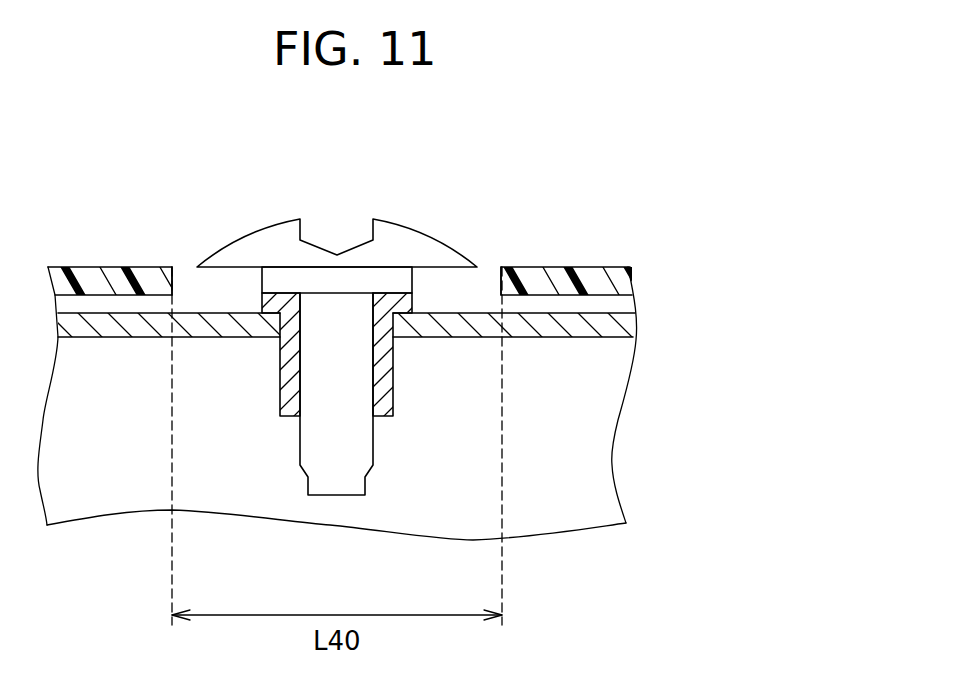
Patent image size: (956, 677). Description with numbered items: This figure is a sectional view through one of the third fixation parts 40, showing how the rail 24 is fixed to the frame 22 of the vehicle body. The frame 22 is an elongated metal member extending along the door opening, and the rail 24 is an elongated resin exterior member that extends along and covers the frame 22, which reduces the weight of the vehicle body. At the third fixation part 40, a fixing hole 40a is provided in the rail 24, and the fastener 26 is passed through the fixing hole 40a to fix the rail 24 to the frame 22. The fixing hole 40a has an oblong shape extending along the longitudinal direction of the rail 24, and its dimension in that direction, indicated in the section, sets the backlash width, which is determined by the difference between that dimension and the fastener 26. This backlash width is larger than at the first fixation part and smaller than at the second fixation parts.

The frame 22 is at (620, 326).
The rail 24 is at (617, 282).
The fastener 26 is at (410, 240).
The third fixation part 40 is at (571, 124).
The fixing hole 40a is at (178, 268).